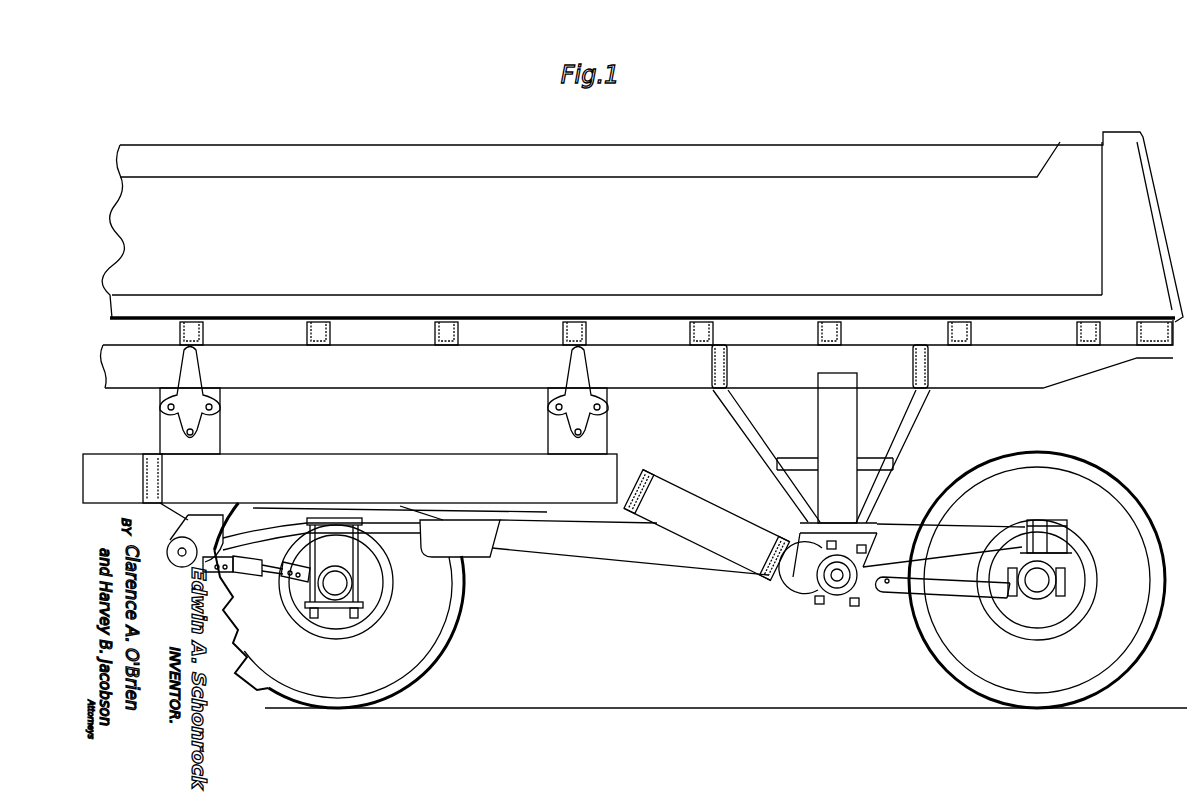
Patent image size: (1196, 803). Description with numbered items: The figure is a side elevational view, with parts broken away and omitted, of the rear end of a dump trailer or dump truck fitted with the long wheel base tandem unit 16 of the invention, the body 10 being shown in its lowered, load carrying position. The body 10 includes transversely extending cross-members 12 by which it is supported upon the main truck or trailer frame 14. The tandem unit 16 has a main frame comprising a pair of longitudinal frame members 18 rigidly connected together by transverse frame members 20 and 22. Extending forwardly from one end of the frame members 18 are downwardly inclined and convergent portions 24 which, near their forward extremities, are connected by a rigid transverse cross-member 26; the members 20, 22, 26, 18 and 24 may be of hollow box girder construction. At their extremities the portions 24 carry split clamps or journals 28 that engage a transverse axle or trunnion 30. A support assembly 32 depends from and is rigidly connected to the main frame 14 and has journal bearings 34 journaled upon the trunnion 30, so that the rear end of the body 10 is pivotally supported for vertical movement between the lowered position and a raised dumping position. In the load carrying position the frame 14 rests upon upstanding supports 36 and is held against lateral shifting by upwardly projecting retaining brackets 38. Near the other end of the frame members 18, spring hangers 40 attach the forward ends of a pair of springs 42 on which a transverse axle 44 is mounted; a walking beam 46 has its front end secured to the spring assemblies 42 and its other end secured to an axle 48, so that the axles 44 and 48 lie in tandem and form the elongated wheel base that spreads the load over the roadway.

The body 10 is at (642, 227).
The cross-members 12 is at (457, 335).
The main truck or trailer frame 14 is at (355, 378).
The long wheel base tandem unit 16 is at (543, 510).
The longitudinal frame members 18 is at (437, 463).
The transverse frame member 20 is at (150, 480).
The transverse frame member 22 is at (628, 483).
The downwardly inclined and convergent portions 24 is at (713, 503).
The transverse cross-member 26 is at (790, 575).
The split clamps or journals 28 is at (832, 605).
The transverse axle or trunnion 30 is at (845, 595).
The support assembly 32 is at (905, 452).
The journal bearings 34 is at (865, 540).
The upstanding supports 36 is at (168, 444).
The retaining brackets 38 is at (575, 363).
The spring hangers 40 is at (210, 522).
The springs 42 is at (387, 543).
The transverse axle 44 is at (347, 597).
The walking beam 46 is at (655, 545).
The axle 48 is at (1048, 597).